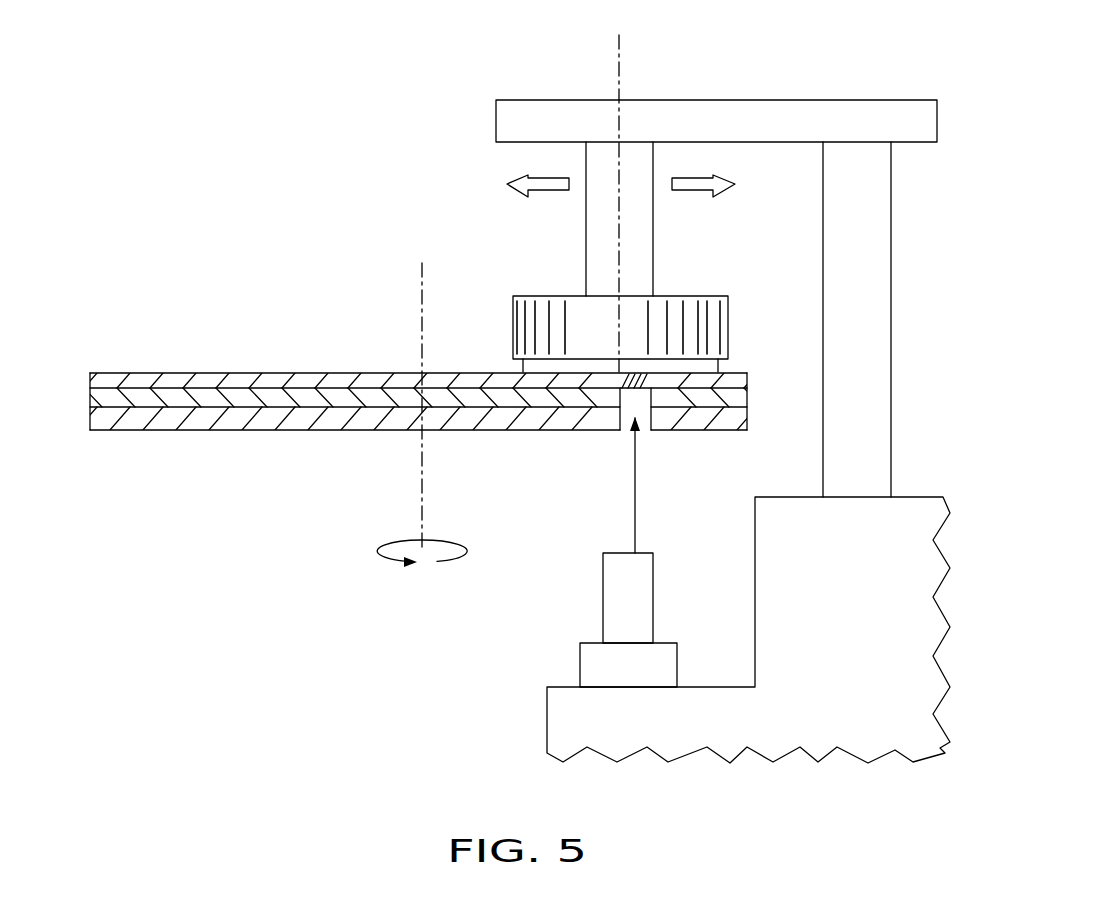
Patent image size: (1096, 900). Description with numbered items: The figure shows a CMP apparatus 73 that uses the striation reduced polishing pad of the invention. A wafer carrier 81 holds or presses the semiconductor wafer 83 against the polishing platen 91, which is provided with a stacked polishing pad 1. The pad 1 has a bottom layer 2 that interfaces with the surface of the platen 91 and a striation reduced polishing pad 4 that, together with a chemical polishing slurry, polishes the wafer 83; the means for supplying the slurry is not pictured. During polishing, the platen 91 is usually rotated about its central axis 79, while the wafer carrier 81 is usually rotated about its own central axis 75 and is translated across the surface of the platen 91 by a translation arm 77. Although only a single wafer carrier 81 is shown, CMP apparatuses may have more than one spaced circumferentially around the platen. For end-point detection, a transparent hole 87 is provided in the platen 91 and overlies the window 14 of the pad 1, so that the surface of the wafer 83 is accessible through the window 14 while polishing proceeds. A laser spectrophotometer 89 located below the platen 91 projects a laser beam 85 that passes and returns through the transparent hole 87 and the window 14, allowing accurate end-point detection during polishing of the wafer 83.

The stacked polishing pad 1 is at (423, 379).
The bottom layer 2 is at (90, 396).
The striation reduced polishing pad 4 is at (90, 380).
The window 14 is at (643, 378).
The CMP apparatus 73 is at (571, 399).
The central axis 75 is at (622, 68).
The translation arm 77 is at (908, 103).
The central axis 79 is at (424, 278).
The wafer carrier 81 is at (691, 300).
The semiconductor wafer 83 is at (715, 366).
The laser beam 85 is at (636, 492).
The transparent hole 87 is at (586, 495).
The laser spectrophotometer 89 is at (602, 598).
The polishing platen 91 is at (122, 431).